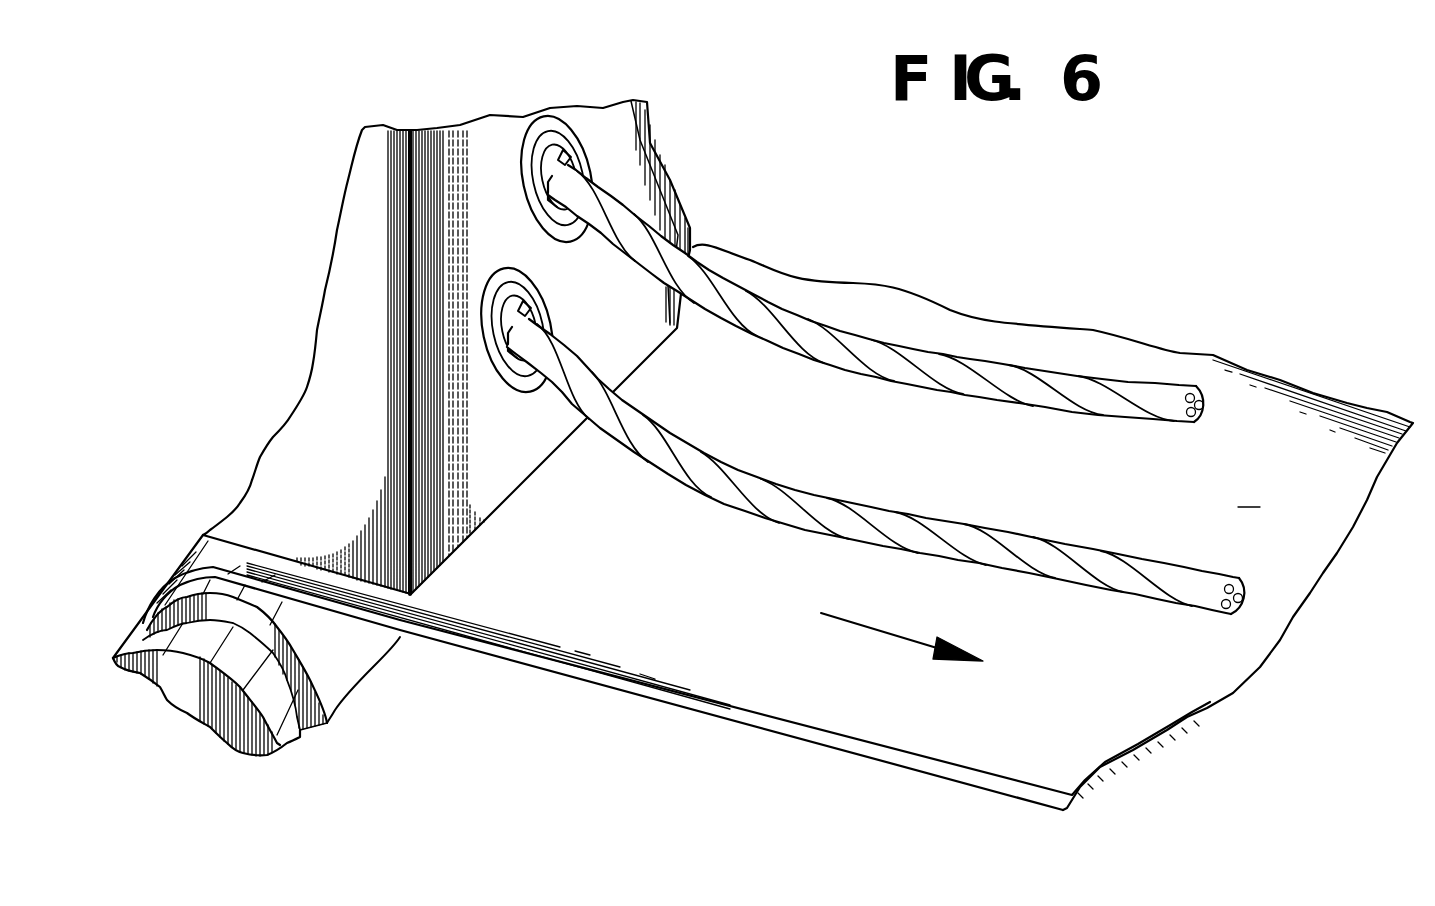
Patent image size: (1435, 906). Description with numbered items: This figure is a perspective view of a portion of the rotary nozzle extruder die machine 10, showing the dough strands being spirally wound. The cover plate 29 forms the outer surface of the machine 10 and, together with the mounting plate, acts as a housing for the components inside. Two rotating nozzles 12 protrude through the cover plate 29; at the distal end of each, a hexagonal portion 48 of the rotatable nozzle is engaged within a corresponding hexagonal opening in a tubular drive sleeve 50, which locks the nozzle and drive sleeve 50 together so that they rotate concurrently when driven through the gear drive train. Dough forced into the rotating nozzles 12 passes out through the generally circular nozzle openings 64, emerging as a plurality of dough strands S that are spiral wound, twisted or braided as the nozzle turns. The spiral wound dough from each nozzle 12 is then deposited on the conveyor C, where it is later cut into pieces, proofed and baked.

The rotary nozzle extruder die machine 10 is at (718, 162).
The rotating nozzle 12 is at (557, 125).
The cover plate 29 is at (443, 153).
The hexagonal portion 48 is at (557, 184).
The drive sleeve 50 is at (547, 207).
The nozzle openings 64 is at (553, 156).
The dough strands S is at (972, 358).
The conveyor C is at (763, 527).